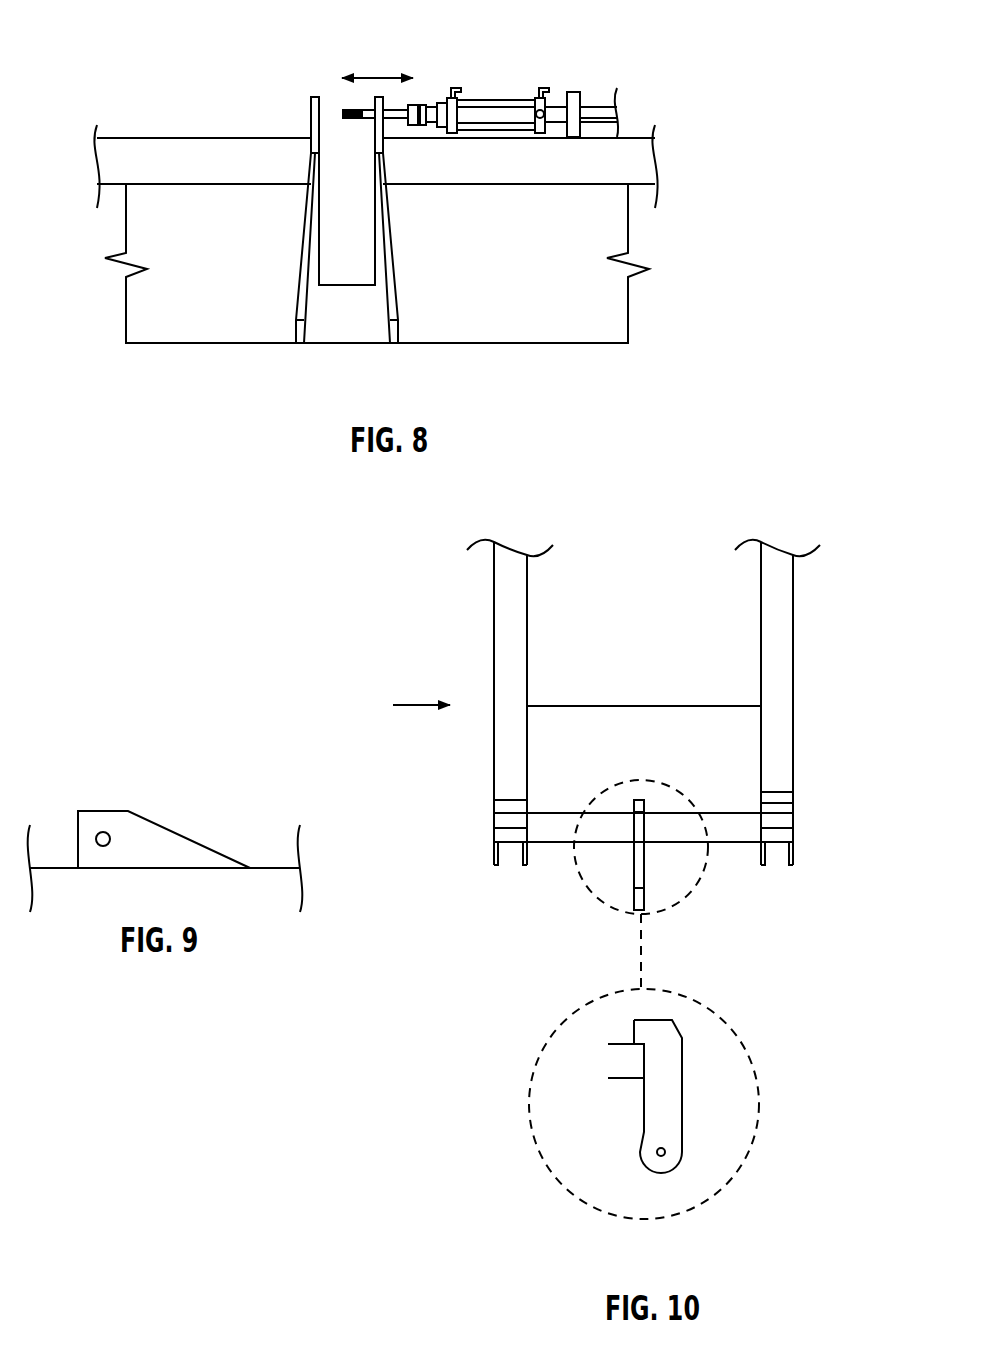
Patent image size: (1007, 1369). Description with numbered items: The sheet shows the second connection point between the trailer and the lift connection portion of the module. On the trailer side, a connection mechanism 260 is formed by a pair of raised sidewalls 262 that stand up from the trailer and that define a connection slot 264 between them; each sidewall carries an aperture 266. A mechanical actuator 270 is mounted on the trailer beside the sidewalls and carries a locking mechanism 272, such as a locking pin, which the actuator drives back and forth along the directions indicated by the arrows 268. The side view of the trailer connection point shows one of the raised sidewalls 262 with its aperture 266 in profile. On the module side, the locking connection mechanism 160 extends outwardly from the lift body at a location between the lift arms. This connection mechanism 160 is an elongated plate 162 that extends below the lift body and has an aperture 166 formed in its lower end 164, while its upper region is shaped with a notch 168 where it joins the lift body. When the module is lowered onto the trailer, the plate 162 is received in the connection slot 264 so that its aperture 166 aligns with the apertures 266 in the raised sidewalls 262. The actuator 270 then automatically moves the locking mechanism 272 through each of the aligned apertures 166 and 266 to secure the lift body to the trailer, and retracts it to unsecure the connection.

In FIG. 10, the locking connection mechanism 160 is at (568, 895).
In FIG. 10, the elongated plate 162 is at (668, 1103).
In FIG. 10, the lower end 164 is at (693, 1160).
In FIG. 10, the aperture 166 is at (662, 1157).
In FIG. 10, the notch 168 is at (645, 1015).
In FIG. 8, the connection mechanism 260 is at (260, 60).
In FIG. 8, the raised sidewalls 262 is at (308, 113).
In FIG. 9, the raised sidewalls 262 is at (85, 823).
In FIG. 8, the slot 264 is at (345, 298).
In FIG. 9, the apertures 266 is at (111, 839).
In FIG. 8, the arrows 268 is at (380, 75).
In FIG. 8, the mechanical actuator 270 is at (520, 112).
In FIG. 8, the locking mechanism 272 is at (432, 105).